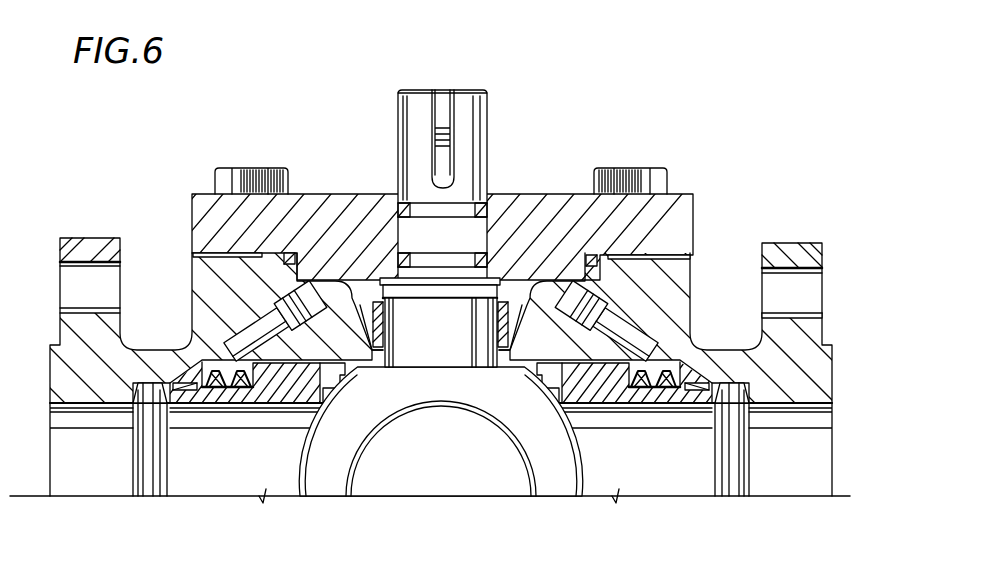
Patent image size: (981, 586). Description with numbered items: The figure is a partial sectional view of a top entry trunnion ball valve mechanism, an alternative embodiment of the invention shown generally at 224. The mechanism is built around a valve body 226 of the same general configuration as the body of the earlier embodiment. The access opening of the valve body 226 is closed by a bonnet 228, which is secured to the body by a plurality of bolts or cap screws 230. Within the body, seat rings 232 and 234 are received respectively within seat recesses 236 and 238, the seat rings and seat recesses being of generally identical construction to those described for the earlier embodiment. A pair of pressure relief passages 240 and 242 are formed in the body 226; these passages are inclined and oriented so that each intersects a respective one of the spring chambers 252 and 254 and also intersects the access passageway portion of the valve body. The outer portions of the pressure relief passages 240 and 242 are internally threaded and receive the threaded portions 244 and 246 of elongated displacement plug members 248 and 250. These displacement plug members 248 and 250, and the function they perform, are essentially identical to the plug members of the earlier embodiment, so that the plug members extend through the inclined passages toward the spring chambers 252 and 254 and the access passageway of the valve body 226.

The alternative embodiment 224 is at (677, 110).
The valve body 226 is at (688, 272).
The bonnet 228 is at (538, 206).
The bolts or cap screws 230 is at (243, 168).
The seat ring 232 is at (282, 392).
The seat ring 234 is at (593, 393).
The seat recess 236 is at (147, 461).
The seat recess 238 is at (730, 463).
The pressure relief passage 240 is at (190, 340).
The pressure relief passage 242 is at (692, 333).
The threaded portion 244 is at (240, 255).
The threaded portion 246 is at (660, 233).
The displacement plug member 248 is at (320, 280).
The displacement plug member 250 is at (565, 280).
The spring chamber 252 is at (218, 388).
The spring chamber 254 is at (672, 400).